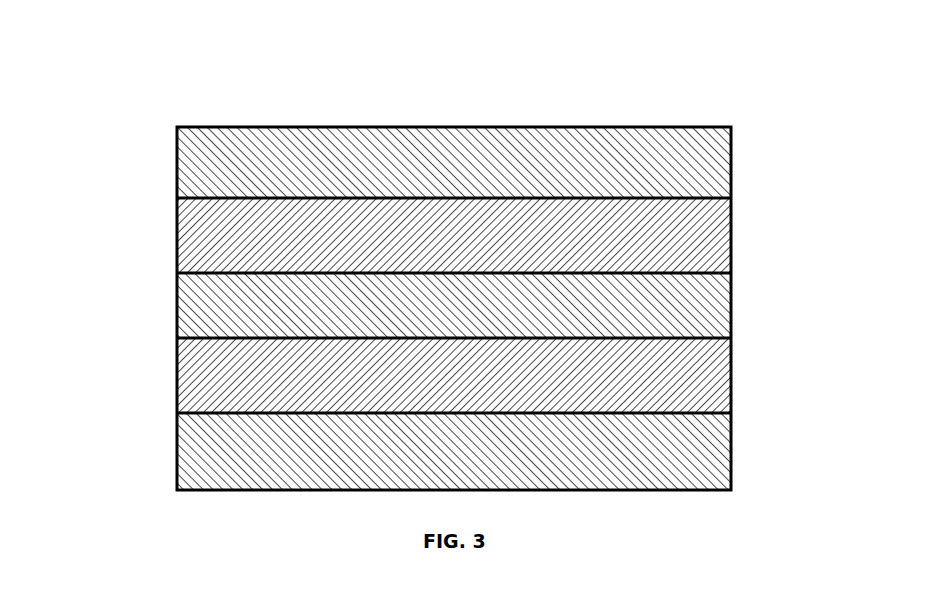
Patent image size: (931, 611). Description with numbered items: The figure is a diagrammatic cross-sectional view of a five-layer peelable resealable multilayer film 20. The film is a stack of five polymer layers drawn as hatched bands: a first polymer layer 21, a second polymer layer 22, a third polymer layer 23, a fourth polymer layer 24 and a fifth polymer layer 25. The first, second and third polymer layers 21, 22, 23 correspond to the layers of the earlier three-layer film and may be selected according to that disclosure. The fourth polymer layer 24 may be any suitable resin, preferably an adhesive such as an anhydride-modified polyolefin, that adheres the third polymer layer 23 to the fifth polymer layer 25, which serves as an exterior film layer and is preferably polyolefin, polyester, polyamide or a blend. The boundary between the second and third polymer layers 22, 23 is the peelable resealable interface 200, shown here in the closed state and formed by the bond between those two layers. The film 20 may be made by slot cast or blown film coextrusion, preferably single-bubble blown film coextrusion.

The peelable resealable multilayer film 20 is at (453, 108).
The first polymer layer 21 is at (177, 445).
The second polymer layer 22 is at (731, 378).
The third polymer layer 23 is at (177, 300).
The fourth polymer layer 24 is at (731, 225).
The fifth polymer layer 25 is at (177, 175).
The peelable resealable interface 200 is at (731, 338).